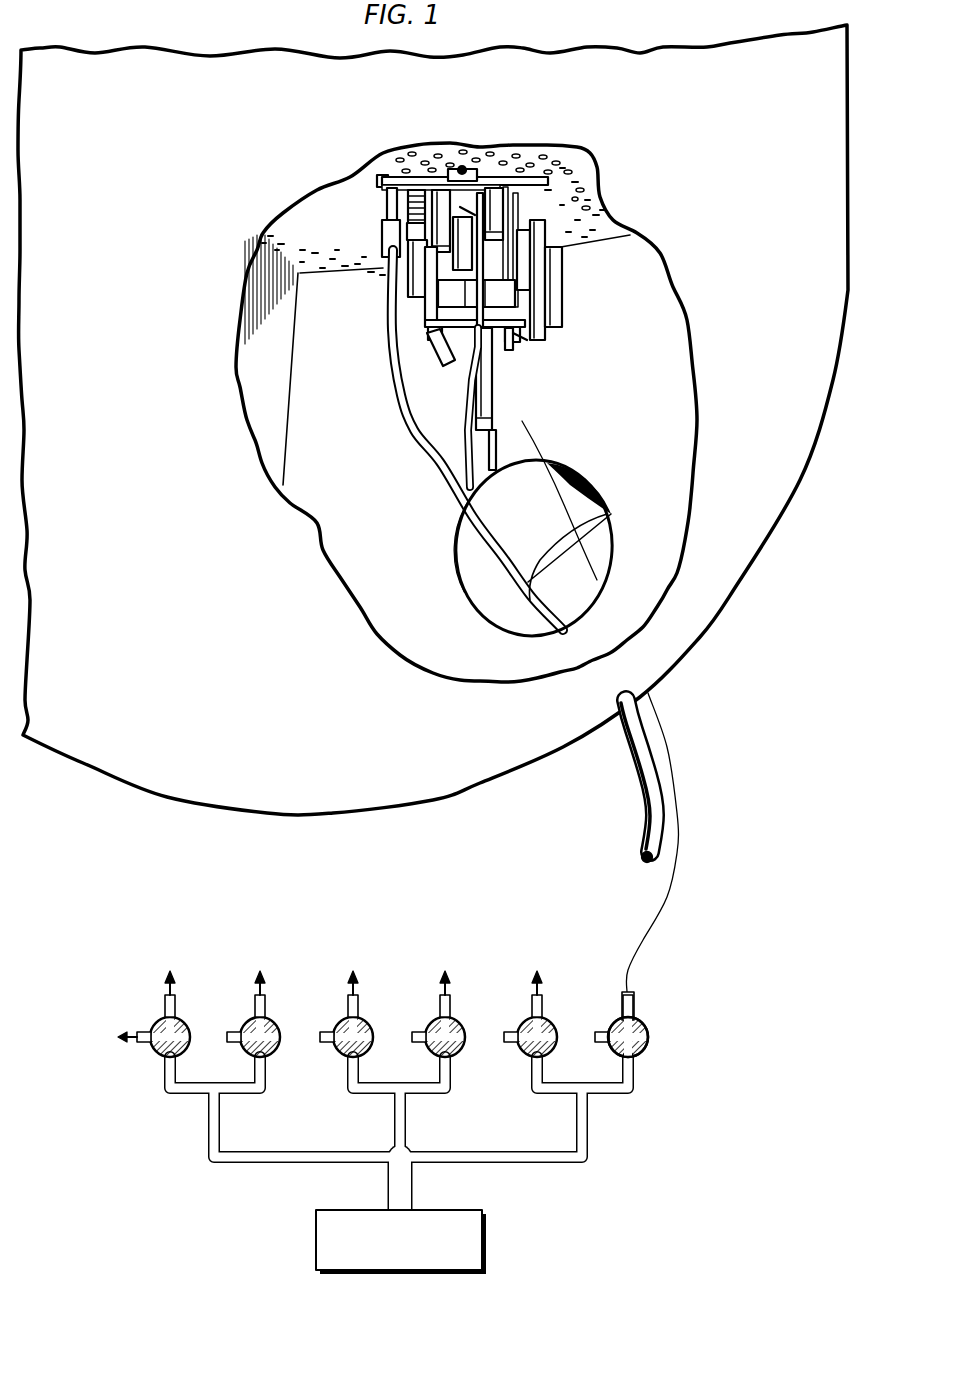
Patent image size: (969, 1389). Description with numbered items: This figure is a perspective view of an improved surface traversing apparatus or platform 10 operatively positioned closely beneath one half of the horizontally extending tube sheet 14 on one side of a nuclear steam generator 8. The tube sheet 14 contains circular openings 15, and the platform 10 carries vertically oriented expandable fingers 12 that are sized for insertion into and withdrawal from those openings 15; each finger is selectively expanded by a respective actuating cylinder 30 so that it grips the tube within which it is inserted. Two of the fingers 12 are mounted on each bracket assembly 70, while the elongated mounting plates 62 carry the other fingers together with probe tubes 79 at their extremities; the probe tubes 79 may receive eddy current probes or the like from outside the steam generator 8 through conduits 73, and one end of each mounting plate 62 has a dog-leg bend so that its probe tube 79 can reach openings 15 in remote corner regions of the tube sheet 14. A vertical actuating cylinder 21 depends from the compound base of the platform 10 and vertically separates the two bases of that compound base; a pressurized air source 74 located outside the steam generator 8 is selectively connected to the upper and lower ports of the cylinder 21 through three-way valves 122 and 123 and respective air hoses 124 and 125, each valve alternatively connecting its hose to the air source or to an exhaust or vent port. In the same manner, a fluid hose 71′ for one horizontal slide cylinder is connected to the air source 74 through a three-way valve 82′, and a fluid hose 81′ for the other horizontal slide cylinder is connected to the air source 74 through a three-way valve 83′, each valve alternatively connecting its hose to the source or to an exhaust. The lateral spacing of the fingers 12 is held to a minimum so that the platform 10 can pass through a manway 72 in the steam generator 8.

The nuclear steam generator 8 is at (204, 135).
The surface traversing apparatus or platform 10 is at (484, 364).
The expandable fingers 12 is at (392, 203).
The tube sheet 14 is at (581, 152).
The circular openings 15 is at (463, 165).
The actuating cylinder 21 is at (492, 393).
The actuating cylinder 30 is at (413, 273).
The mounting plate 62 is at (423, 172).
The bracket assembly 70 is at (427, 303).
The fluid hose 71′ is at (496, 448).
The manway 72 is at (609, 532).
The conduits 73 is at (432, 353).
The pressurized air source 74 is at (318, 1252).
The probe tubes 79 is at (383, 192).
The fluid hose 81′ is at (510, 350).
The three-way valve 82′ is at (465, 1048).
The three-way valve 83′ is at (282, 1048).
The three-way valve 122 is at (558, 1048).
The three-way valve 123 is at (650, 1040).
The air hose 124 is at (525, 341).
The air hose 125 is at (523, 419).